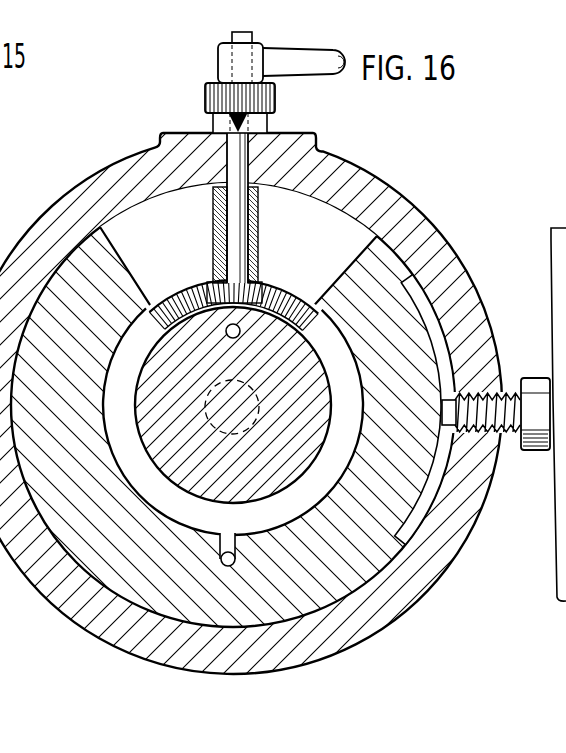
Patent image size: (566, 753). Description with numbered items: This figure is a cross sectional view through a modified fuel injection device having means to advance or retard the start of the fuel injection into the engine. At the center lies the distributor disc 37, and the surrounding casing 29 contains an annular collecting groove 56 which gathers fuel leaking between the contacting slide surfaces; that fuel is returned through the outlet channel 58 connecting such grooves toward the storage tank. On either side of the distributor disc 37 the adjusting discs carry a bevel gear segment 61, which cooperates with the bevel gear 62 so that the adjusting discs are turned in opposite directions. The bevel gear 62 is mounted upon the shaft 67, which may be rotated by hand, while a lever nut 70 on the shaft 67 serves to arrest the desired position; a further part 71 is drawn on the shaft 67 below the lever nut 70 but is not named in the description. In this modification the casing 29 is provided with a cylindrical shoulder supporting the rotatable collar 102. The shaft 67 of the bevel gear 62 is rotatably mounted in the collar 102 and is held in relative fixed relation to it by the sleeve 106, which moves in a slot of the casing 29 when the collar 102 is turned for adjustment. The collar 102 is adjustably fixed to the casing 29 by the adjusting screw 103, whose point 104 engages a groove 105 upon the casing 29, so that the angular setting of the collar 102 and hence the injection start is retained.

The casing 29 is at (165, 597).
The distributor disc 37 is at (278, 353).
The collecting groove 56 is at (229, 540).
The outlet channel 58 is at (233, 553).
The bevel gear segment 61 is at (165, 260).
The bevel gear 62 is at (255, 288).
The shaft 67 is at (233, 240).
The lever nut 70 is at (315, 62).
The collar 71 is at (252, 119).
The collar 102 is at (424, 250).
The adjusting screw 103 is at (532, 383).
The point 104 is at (460, 427).
The groove 105 is at (431, 330).
The sleeve 106 is at (213, 221).